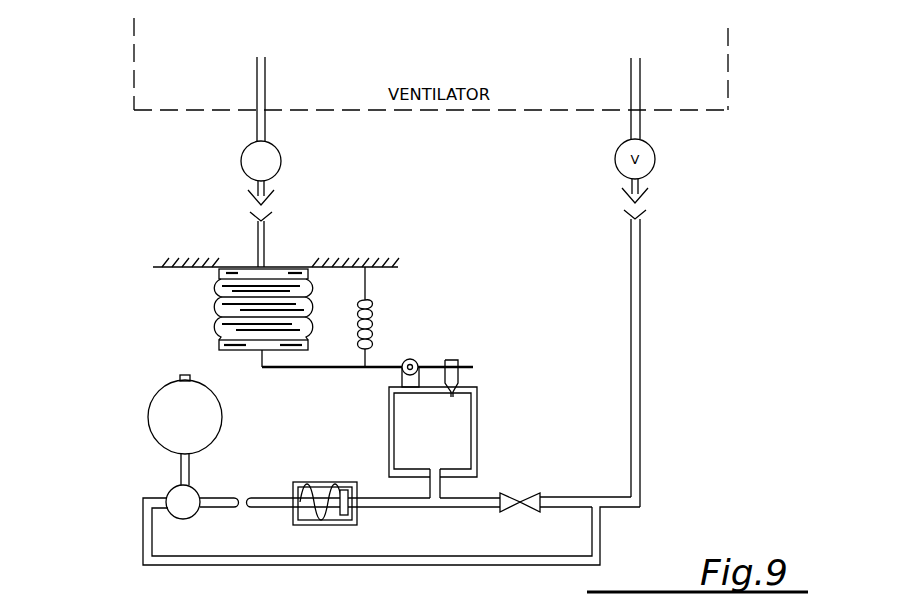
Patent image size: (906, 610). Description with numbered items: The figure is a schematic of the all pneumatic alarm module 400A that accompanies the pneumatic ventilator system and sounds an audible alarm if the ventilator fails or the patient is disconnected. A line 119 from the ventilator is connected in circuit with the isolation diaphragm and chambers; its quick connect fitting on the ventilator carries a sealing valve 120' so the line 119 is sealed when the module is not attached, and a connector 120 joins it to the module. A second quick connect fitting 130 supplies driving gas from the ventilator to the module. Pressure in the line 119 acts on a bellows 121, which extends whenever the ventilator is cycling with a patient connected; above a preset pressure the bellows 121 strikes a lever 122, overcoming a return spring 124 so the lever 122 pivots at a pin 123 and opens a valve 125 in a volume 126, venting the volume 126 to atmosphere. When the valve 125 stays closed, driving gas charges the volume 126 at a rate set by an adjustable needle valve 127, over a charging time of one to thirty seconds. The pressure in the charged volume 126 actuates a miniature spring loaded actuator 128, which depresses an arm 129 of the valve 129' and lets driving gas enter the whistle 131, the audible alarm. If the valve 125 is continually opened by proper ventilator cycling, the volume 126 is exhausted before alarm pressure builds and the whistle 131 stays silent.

The line 119 is at (257, 70).
The sealing valve 120' is at (293, 161).
The connector 120 is at (213, 224).
The quick connect fitting 130 is at (631, 196).
The bellows 121 is at (217, 297).
The return spring 124 is at (372, 312).
The lever 122 is at (343, 369).
The pin 123 is at (412, 360).
The valve 125 is at (458, 362).
The volume 126 is at (478, 450).
The needle valve 127 is at (521, 500).
The spring loaded actuator 128 is at (308, 482).
The arm 129 is at (222, 483).
The valve 129' is at (146, 493).
The whistle 131 is at (150, 399).
The pneumatic alarm module 400A is at (127, 522).